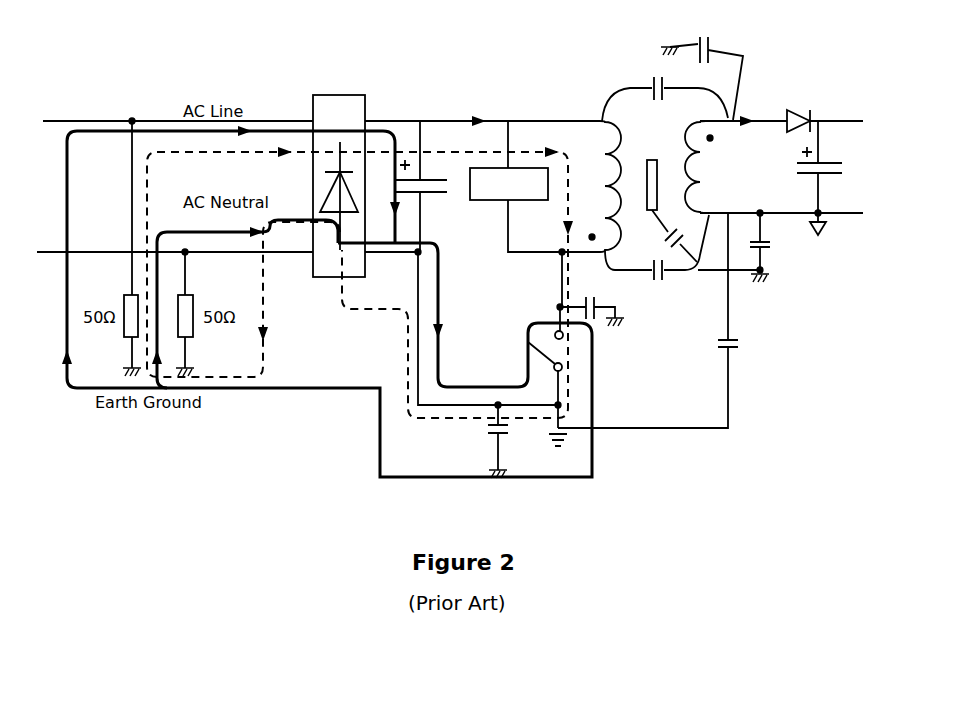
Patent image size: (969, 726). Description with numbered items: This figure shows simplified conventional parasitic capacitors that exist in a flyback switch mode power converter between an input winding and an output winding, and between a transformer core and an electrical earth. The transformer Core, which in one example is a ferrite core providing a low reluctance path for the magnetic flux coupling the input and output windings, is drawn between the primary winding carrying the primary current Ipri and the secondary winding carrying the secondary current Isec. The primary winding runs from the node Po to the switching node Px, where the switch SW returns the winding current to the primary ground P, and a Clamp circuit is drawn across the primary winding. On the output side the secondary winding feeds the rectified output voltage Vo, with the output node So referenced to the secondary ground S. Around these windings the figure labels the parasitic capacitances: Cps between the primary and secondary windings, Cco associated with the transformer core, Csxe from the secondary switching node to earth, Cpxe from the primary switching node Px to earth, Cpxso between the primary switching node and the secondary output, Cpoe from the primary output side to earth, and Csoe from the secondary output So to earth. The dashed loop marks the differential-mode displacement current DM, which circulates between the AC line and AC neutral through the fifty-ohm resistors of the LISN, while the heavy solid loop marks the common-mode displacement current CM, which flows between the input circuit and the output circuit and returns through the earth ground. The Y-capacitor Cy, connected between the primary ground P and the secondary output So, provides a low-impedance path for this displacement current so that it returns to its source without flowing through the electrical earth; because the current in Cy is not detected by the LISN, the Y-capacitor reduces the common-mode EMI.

The differential-mode displacement current DM is at (167, 140).
The common-mode displacement current CM is at (300, 398).
The primary current Ipri is at (473, 111).
The primary winding terminal Po is at (562, 255).
The clamp circuit Clamp is at (509, 184).
The primary-secondary capacitance Cps is at (665, 99).
The secondary switching node to earth capacitance Csxe is at (702, 66).
The transformer core Core is at (650, 173).
The core capacitance Cco is at (662, 236).
The primary switching node to secondary output capacitance Cpxso is at (682, 261).
The secondary output to earth capacitance Csoe is at (783, 246).
The Y-capacitor Cy is at (663, 320).
The primary switching node to earth capacitance Cpxe is at (592, 302).
The primary switching node Px is at (545, 304).
The switch SW is at (528, 356).
The primary ground P is at (560, 436).
The primary output to earth capacitance Cpoe is at (475, 440).
The secondary current Isec is at (766, 128).
The output voltage Vo is at (828, 167).
The secondary output node So is at (777, 206).
The secondary ground S is at (833, 227).